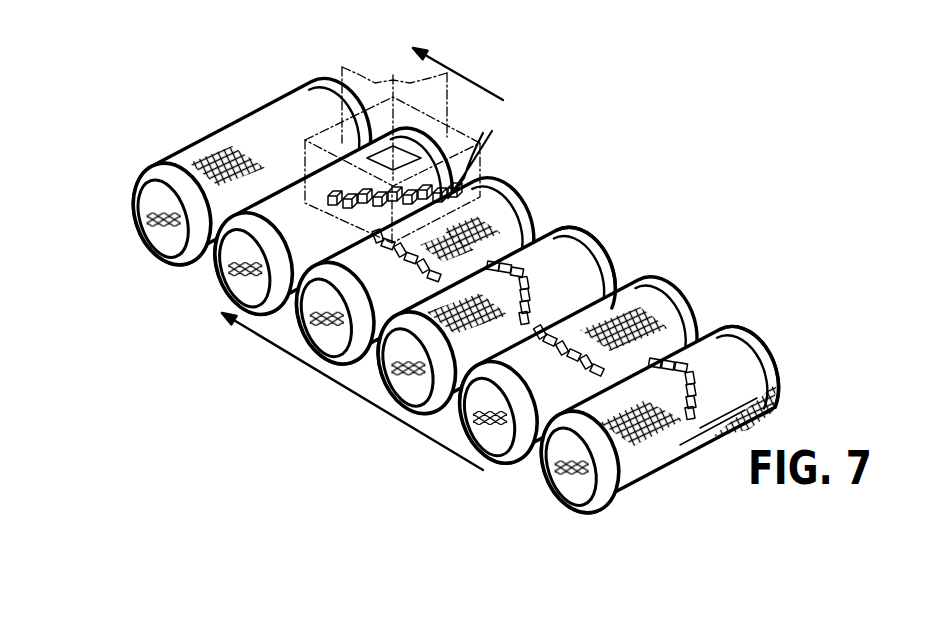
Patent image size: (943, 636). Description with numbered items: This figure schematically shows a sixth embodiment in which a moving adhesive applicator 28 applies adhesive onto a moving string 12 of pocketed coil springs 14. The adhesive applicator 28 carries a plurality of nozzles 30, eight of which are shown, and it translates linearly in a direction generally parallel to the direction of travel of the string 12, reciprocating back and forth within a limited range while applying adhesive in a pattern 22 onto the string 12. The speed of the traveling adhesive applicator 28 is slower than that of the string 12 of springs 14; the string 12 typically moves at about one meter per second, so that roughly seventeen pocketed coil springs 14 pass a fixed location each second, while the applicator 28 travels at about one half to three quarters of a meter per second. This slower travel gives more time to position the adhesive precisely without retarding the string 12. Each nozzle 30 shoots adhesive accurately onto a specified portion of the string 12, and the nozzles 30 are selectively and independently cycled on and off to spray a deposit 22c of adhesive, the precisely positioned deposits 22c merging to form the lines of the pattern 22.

The string 12 is at (452, 298).
The pocketed coil springs 14 is at (605, 257).
The pattern 22 is at (528, 264).
The deposit 22c is at (692, 352).
The adhesive applicator 28 is at (366, 72).
The nozzles 30 is at (488, 134).